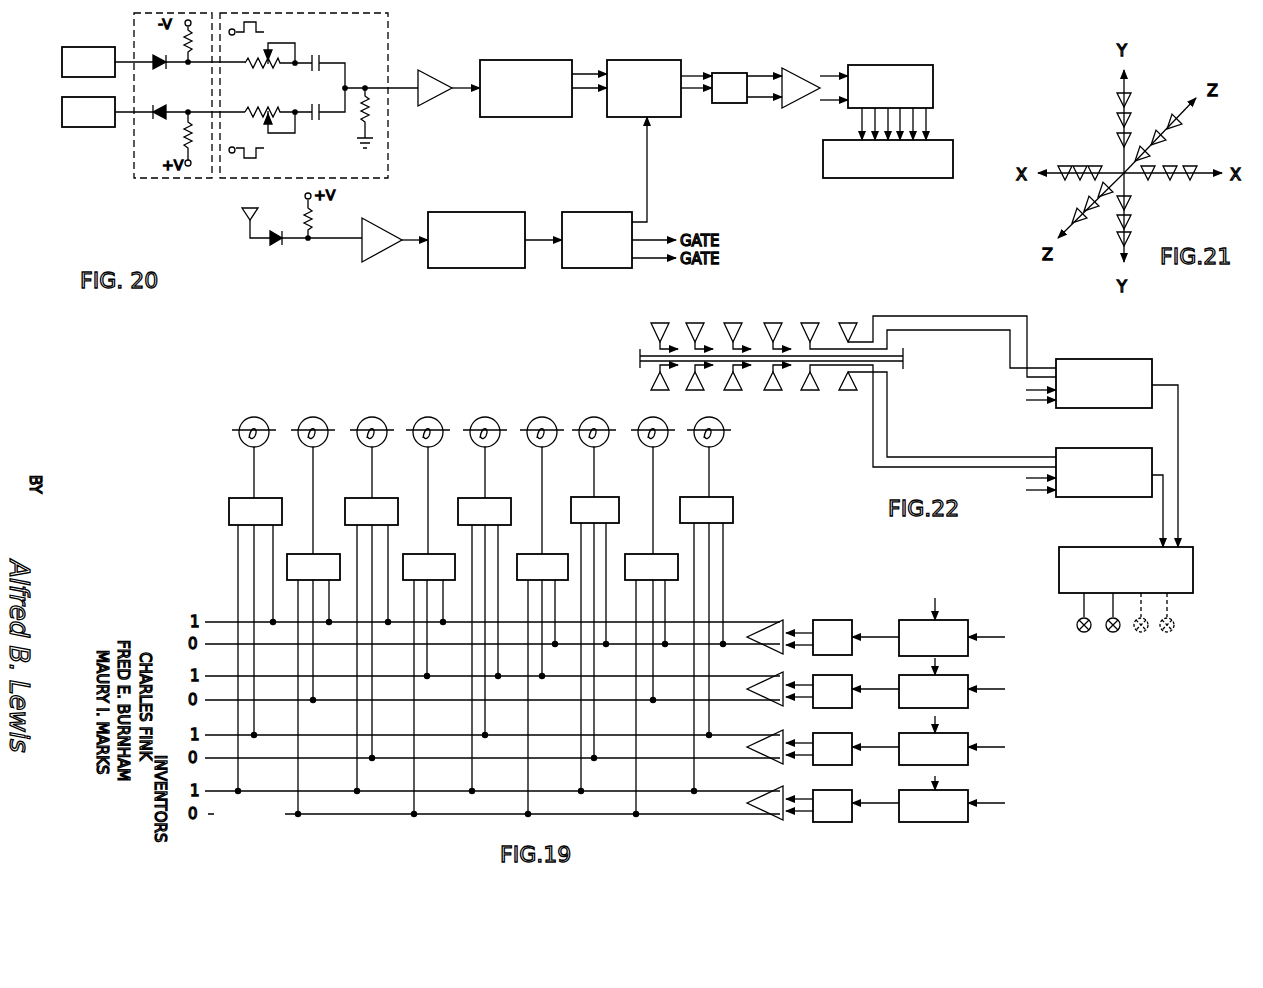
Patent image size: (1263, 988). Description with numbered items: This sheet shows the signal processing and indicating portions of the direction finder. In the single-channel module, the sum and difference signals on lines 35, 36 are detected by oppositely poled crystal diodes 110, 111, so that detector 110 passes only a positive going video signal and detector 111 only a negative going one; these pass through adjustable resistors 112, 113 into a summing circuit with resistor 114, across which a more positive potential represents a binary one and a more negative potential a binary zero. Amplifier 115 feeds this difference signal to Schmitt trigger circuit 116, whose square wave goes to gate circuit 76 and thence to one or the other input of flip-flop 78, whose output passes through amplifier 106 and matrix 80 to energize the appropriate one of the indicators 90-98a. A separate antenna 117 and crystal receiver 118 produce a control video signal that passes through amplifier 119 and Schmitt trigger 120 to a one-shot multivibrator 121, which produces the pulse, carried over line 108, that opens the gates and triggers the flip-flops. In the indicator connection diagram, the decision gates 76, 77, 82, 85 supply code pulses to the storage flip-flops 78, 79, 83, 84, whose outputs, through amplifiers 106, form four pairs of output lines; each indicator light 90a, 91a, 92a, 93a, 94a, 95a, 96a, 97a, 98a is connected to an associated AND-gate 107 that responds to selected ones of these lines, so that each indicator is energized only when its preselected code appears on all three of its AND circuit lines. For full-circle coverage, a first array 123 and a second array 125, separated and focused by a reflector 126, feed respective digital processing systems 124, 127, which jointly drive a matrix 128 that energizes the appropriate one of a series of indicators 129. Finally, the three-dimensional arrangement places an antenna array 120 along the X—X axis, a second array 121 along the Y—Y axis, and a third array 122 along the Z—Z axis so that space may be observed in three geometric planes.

In FIG. 20, the sum signal line 35 is at (128, 61).
In FIG. 20, the difference signal line 36 is at (126, 120).
In FIG. 20, the crystal diode 110 is at (160, 66).
In FIG. 20, the crystal diode 111 is at (162, 117).
In FIG. 20, the adjustable resistor 112 is at (262, 66).
In FIG. 20, the adjustable resistor 113 is at (262, 108).
In FIG. 20, the resistor 114 is at (359, 126).
In FIG. 20, the amplifier 115 is at (434, 74).
In FIG. 20, the Schmitt trigger circuit 116 is at (538, 62).
In FIG. 20, the gate circuit 76 is at (654, 62).
In FIG. 19, the gate circuit 76 is at (968, 624).
In FIG. 20, the flip-flop 78 is at (735, 73).
In FIG. 19, the flip-flop 78 is at (850, 622).
In FIG. 20, the amplifier 106 is at (795, 70).
In FIG. 19, the amplifier 106 is at (774, 627).
In FIG. 20, the matrix 80 is at (884, 65).
In FIG. 20, the indicators 90-98a is at (852, 178).
In FIG. 20, the antenna 117 is at (243, 218).
In FIG. 20, the crystal receiver 118 is at (274, 248).
In FIG. 20, the amplifier 119 is at (374, 228).
In FIG. 20, the Schmitt trigger 120 is at (470, 211).
In FIG. 21, the Schmitt trigger 120 is at (1184, 180).
In FIG. 20, the one-shot multivibrator 121 is at (586, 210).
In FIG. 21, the one-shot multivibrator 121 is at (1122, 106).
In FIG. 20, the line 108 is at (648, 184).
In FIG. 19, the line 108 is at (940, 602).
In FIG. 21, the third antenna array 122 is at (1176, 127).
In FIG. 22, the first array 123 is at (848, 320).
In FIG. 22, the second array 125 is at (846, 394).
In FIG. 22, the reflector 126 is at (900, 358).
In FIG. 22, the digital processing system 124 is at (1152, 360).
In FIG. 22, the digital processing system 127 is at (1060, 497).
In FIG. 22, the matrix 128 is at (1094, 547).
In FIG. 22, the indicators 129 is at (1113, 632).
In FIG. 19, the indicator light 90a is at (719, 444).
In FIG. 19, the indicator light 91a is at (663, 444).
In FIG. 19, the indicator light 92a is at (604, 444).
In FIG. 19, the indicator light 93a is at (552, 444).
In FIG. 19, the indicator light 94a is at (495, 444).
In FIG. 19, the indicator light 95a is at (438, 444).
In FIG. 19, the indicator light 96a is at (382, 444).
In FIG. 19, the indicator light 97a is at (323, 444).
In FIG. 19, the indicator light 98a is at (264, 444).
In FIG. 19, the AND-gate 107 is at (733, 520).
In FIG. 19, the storage element 79 is at (850, 690).
In FIG. 19, the storage element 83 is at (850, 740).
In FIG. 19, the comparator circuit 84 is at (852, 800).
In FIG. 19, the decision element 77 is at (969, 678).
In FIG. 19, the decision element 82 is at (970, 738).
In FIG. 19, the decision element 85 is at (970, 794).